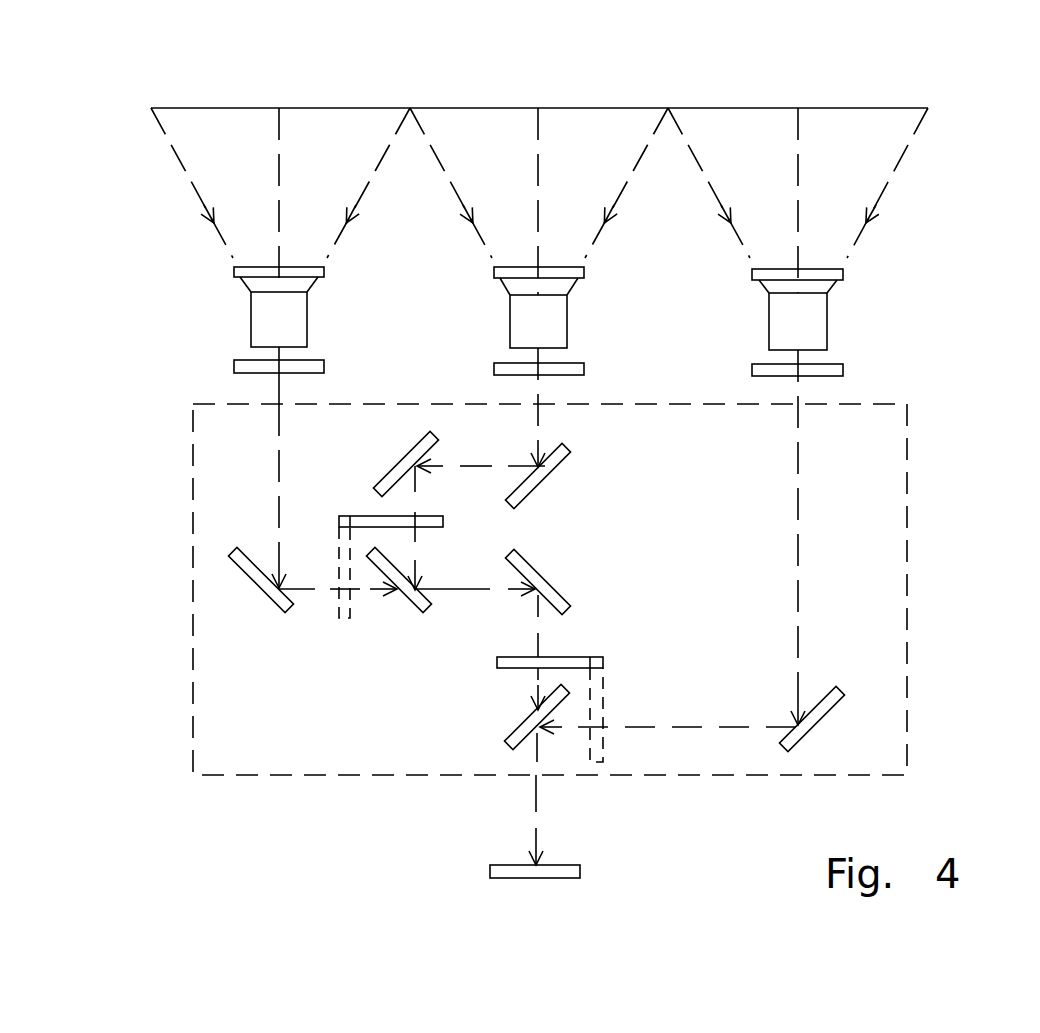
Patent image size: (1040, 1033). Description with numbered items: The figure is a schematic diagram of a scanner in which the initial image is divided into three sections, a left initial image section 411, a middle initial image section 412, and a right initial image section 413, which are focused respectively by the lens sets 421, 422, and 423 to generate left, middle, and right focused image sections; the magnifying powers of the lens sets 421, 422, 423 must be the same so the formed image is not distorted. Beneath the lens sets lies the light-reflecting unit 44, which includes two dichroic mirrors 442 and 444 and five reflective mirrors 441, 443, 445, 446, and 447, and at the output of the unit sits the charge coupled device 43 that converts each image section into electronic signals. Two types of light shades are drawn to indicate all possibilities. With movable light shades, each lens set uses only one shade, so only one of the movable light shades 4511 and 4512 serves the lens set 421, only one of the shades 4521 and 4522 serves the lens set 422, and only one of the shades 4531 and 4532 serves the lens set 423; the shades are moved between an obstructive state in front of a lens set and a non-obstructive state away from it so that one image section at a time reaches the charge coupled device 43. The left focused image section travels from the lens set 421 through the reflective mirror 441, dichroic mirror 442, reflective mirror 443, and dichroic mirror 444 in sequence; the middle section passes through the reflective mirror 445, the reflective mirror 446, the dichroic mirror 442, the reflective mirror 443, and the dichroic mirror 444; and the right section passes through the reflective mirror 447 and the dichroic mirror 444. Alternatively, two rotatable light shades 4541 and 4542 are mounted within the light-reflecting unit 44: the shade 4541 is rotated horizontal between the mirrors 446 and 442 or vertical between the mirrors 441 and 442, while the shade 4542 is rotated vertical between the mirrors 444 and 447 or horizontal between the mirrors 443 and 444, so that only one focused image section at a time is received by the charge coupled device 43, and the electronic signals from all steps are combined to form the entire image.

The left initial image section 411 is at (257, 108).
The middle initial image section 412 is at (517, 108).
The right initial image section 413 is at (777, 108).
The lens set 421 is at (295, 310).
The lens set 422 is at (555, 313).
The lens set 423 is at (815, 314).
The movable light shade 4511 is at (323, 275).
The movable light shade 4512 is at (324, 367).
The movable light shade 4521 is at (582, 276).
The movable light shade 4522 is at (584, 370).
The movable light shade 4531 is at (843, 278).
The movable light shade 4532 is at (843, 371).
The light-reflecting unit 44 is at (887, 477).
The reflective mirror 441 is at (290, 610).
The dichroic mirror 442 is at (427, 605).
The reflective mirror 443 is at (550, 587).
The dichroic mirror 444 is at (518, 730).
The reflective mirror 445 is at (572, 450).
The reflective mirror 446 is at (410, 455).
The reflective mirror 447 is at (815, 720).
The rotatable light shade 4541 is at (342, 518).
The rotatable light shade 4542 is at (620, 645).
The charge coupled device 43 is at (560, 870).